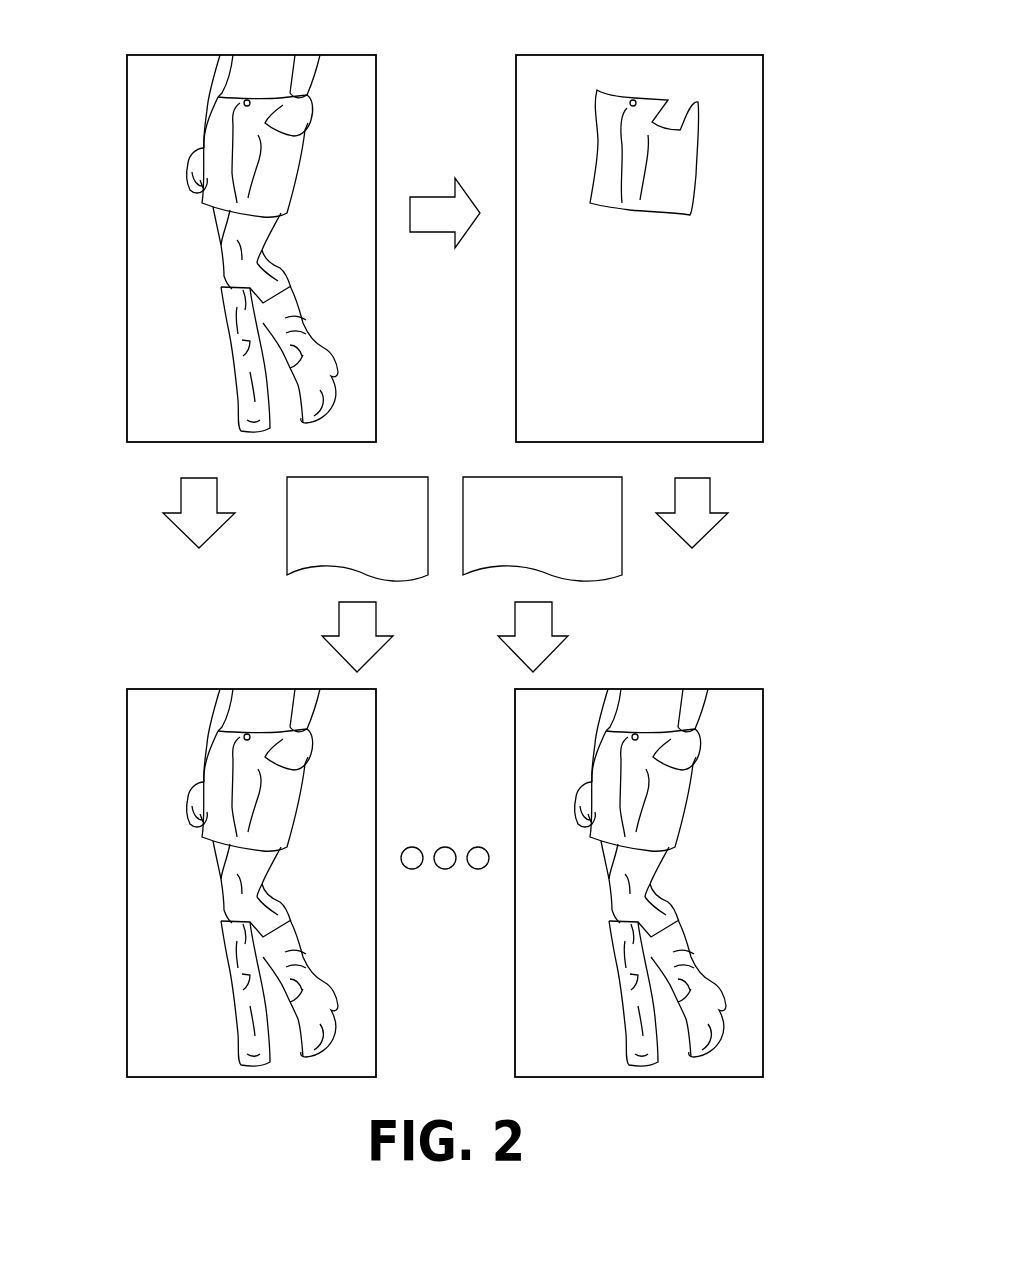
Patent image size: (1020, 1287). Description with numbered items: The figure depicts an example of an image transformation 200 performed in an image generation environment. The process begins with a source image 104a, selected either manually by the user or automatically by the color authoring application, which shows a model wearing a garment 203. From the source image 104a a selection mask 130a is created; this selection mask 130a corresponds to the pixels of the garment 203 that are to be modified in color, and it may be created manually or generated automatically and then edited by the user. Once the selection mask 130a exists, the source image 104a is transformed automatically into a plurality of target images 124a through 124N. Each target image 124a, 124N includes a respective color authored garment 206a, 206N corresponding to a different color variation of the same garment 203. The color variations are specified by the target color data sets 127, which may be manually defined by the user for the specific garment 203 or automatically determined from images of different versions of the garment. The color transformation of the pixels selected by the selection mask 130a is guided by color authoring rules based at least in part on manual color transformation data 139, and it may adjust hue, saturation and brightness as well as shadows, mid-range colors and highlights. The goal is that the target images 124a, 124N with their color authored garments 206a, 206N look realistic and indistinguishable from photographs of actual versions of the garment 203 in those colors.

The source image 104a is at (145, 100).
The garment 203 is at (277, 161).
The selection mask 130a is at (657, 161).
The target color data sets 127 is at (357, 529).
The manual color transformation data 139 is at (542, 529).
The target image 124a is at (163, 758).
The color authored garment 206a is at (268, 818).
The target image 124N is at (727, 725).
The color authored garment 206N is at (657, 795).
The image transformation 200 is at (755, 1103).